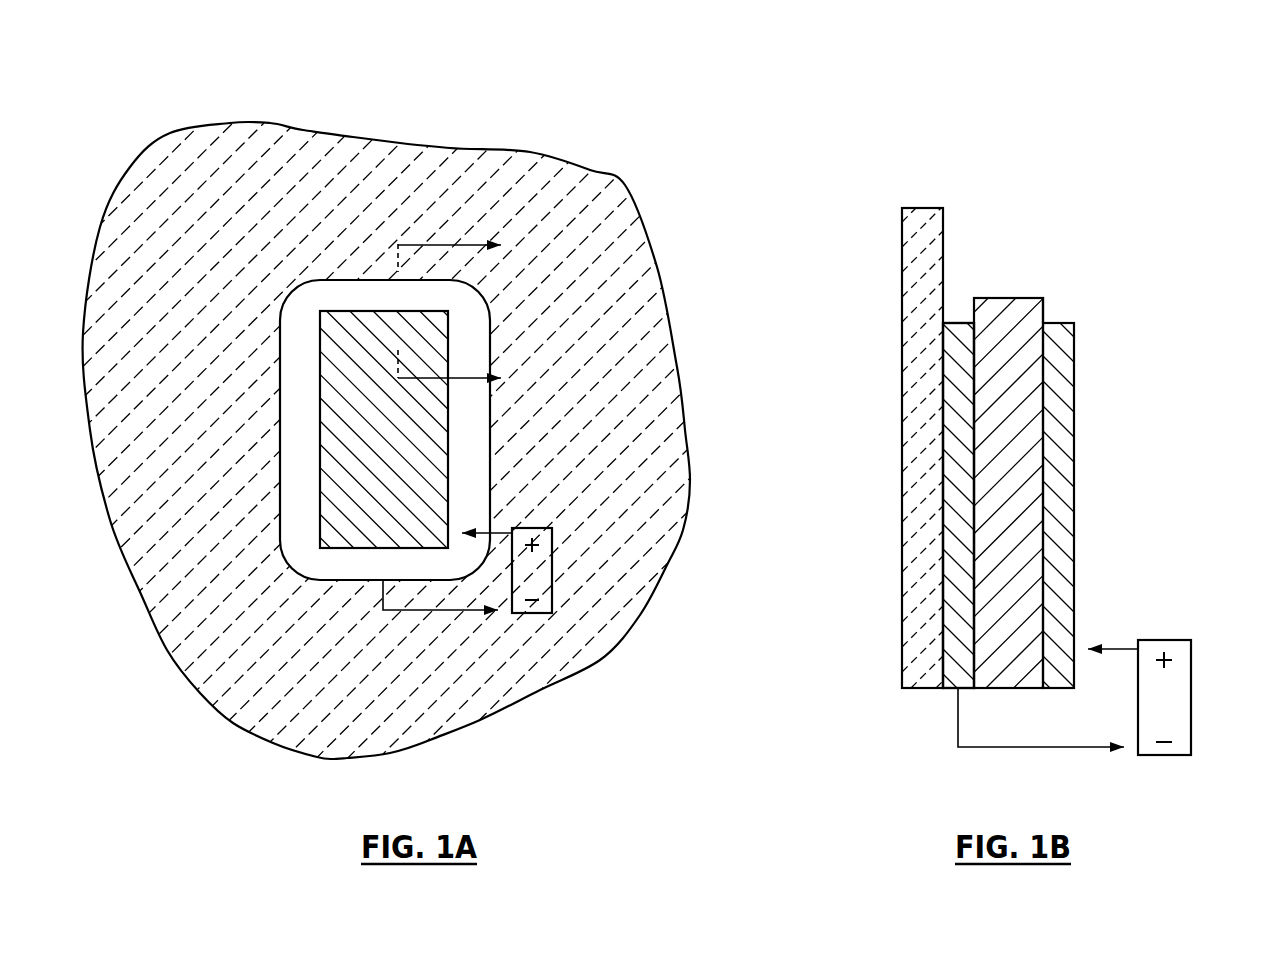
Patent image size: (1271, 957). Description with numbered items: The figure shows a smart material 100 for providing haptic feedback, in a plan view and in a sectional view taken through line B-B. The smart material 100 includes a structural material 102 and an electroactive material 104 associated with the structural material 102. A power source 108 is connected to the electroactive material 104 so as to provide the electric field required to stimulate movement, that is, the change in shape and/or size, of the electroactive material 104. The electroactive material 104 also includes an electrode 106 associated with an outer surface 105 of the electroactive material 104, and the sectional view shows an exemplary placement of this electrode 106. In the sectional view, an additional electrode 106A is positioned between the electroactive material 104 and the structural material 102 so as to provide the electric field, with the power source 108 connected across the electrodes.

In FIG. 1A, the smart material 100 is at (455, 405).
In FIG. 1A, the structural material 102 is at (601, 208).
In FIG. 1B, the structural material 102 is at (932, 226).
In FIG. 1A, the electroactive material 104 is at (478, 437).
In FIG. 1B, the electroactive material 104 is at (1011, 322).
In FIG. 1B, the outer surface 105 is at (1060, 311).
In FIG. 1A, the electrode 106 is at (425, 503).
In FIG. 1B, the electrode 106 is at (1070, 560).
In FIG. 1B, the additional electrode 106A is at (958, 478).
In FIG. 1A, the power source 108 is at (552, 575).
In FIG. 1B, the power source 108 is at (1191, 672).